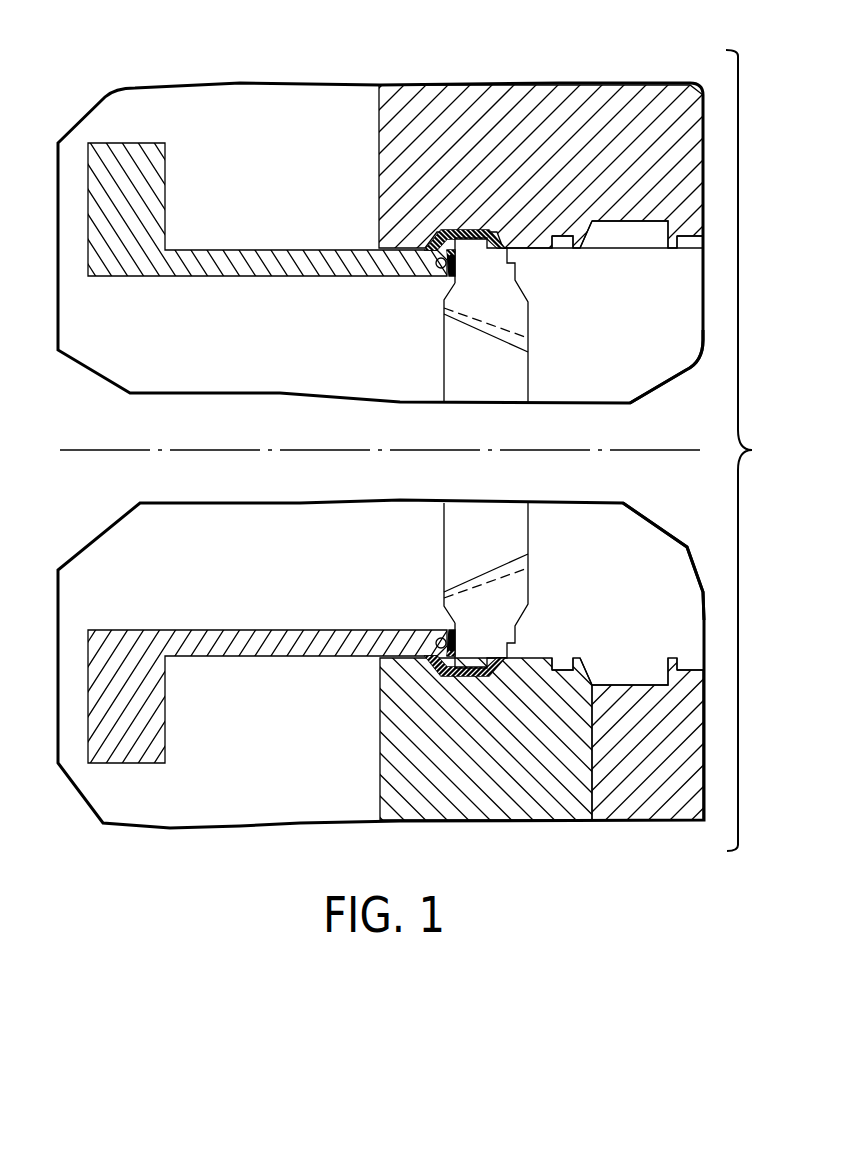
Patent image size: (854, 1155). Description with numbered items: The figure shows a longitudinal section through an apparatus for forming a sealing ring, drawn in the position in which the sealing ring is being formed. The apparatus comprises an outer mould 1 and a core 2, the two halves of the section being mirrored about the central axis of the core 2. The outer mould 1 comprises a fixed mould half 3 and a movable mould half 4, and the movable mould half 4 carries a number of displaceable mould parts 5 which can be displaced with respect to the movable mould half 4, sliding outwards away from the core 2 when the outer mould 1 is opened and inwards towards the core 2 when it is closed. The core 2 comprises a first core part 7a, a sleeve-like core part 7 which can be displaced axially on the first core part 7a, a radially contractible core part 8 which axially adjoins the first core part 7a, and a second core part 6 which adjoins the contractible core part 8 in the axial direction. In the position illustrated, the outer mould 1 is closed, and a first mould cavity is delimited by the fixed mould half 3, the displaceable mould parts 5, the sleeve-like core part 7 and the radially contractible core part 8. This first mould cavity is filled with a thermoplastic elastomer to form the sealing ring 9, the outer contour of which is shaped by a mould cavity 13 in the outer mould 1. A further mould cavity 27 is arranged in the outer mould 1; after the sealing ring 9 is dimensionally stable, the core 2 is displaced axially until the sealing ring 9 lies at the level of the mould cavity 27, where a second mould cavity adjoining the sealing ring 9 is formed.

The outer mould 1 is at (408, 57).
The core 2 is at (433, 408).
The fixed mould half 3 is at (563, 96).
The movable mould half 4 is at (640, 808).
The displaceable mould parts 5 is at (497, 808).
The second core part 6 is at (626, 384).
The sleeve-like core part 7 is at (255, 258).
The first core part 7a is at (195, 378).
The radially contractible core part 8 is at (505, 300).
The sealing ring 9 is at (438, 266).
The mould cavity 13 is at (458, 232).
The mould cavity 27 is at (640, 233).